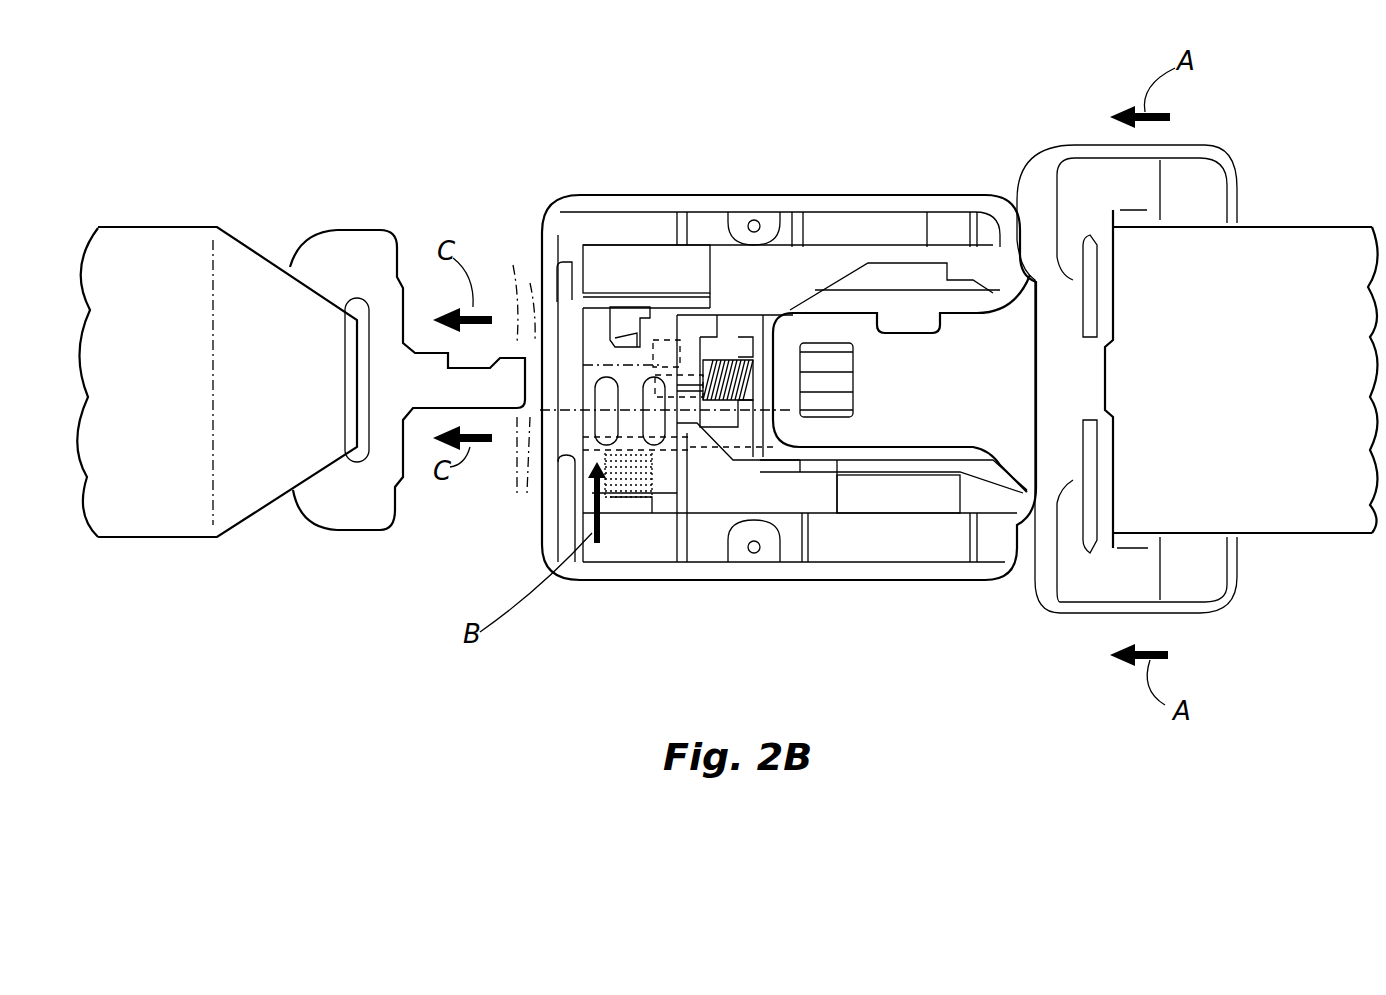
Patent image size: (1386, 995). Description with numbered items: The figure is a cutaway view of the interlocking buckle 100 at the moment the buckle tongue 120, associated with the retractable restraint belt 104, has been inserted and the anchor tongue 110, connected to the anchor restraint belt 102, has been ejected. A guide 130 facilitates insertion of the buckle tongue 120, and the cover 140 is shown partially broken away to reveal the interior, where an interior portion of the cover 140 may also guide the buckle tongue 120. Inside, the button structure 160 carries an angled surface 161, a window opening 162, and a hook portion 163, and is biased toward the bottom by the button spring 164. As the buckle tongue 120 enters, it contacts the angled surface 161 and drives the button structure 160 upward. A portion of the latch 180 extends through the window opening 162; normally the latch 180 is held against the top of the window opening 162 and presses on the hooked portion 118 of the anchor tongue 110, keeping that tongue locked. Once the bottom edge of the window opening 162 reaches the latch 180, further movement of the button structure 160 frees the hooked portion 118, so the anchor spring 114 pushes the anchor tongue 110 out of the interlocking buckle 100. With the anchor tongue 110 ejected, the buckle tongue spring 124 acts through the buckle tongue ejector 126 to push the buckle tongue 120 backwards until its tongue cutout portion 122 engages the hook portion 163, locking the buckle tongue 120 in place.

The interlocking buckle 100 is at (760, 188).
The anchor restraint belt 102 is at (174, 387).
The retractable restraint belt 104 is at (1287, 390).
The anchor tongue 110 is at (495, 403).
The anchor spring 114 is at (683, 397).
The hooked portion 118 is at (513, 340).
The buckle tongue 120 is at (967, 398).
The tongue cutout portion 122 is at (915, 324).
The buckle tongue spring 124 is at (733, 353).
The buckle tongue ejector 126 is at (773, 310).
The guide 130 is at (817, 452).
The cover 140 is at (838, 552).
The button structure 160 is at (630, 347).
The angled surface 161 is at (815, 290).
The window opening 162 is at (602, 330).
The hook portion 163 is at (925, 265).
The button spring 164 is at (632, 512).
The latch 180 is at (645, 258).